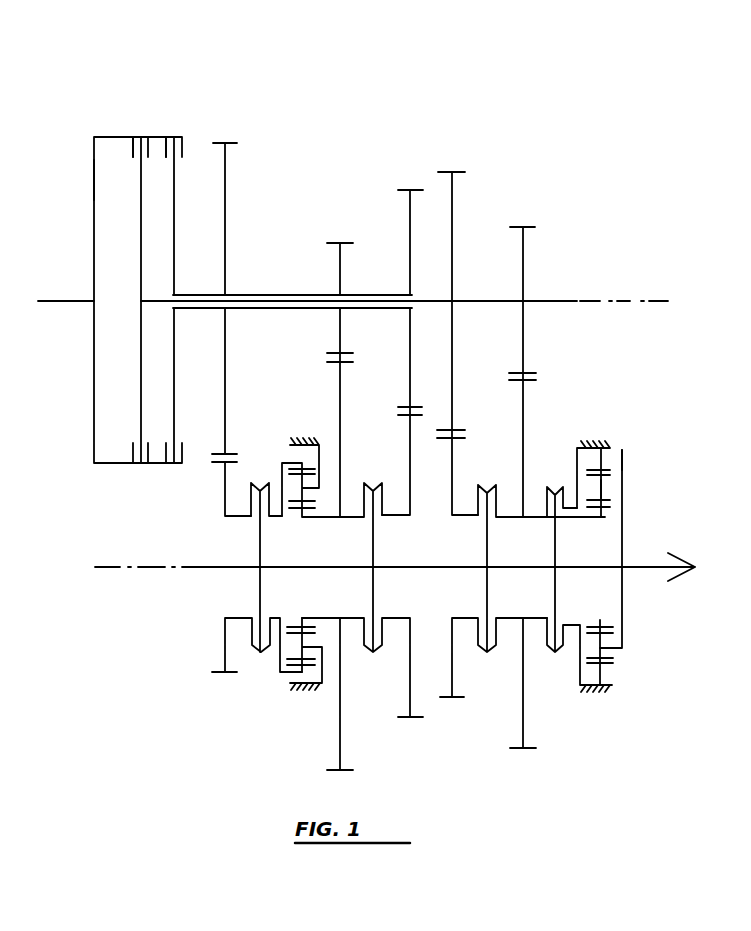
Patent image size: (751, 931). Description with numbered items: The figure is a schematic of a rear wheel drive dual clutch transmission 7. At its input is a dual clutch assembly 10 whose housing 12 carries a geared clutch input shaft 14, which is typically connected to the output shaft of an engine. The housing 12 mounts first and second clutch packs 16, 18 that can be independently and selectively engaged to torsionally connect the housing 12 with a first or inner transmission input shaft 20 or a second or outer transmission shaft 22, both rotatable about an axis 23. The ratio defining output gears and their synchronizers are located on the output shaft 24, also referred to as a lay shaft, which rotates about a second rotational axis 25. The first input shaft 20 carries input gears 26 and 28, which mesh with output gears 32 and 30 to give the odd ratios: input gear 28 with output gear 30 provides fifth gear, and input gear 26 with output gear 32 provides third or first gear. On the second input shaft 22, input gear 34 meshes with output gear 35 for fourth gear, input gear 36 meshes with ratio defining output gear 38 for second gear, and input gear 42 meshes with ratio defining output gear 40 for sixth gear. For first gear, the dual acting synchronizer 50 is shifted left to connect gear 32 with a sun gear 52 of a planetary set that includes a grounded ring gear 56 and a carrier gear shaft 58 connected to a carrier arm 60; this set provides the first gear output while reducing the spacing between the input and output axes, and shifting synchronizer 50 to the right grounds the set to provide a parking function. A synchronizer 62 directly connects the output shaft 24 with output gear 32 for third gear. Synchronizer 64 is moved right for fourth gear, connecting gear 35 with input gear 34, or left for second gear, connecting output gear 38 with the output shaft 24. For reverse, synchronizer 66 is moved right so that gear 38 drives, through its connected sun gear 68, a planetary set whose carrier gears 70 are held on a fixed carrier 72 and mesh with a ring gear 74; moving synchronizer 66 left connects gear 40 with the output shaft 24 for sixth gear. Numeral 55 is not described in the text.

The dual clutch transmission 7 is at (313, 140).
The dual clutch assembly 10 is at (112, 137).
The housing 12 is at (93, 177).
The geared clutch input shaft 14 is at (50, 300).
The first clutch pack 16 is at (133, 148).
The second clutch pack 18 is at (166, 148).
The first transmission input shaft 20 is at (548, 302).
The second transmission input shaft 22 is at (247, 295).
The axis 23 is at (637, 302).
The output shaft 24 is at (402, 562).
The second rotational axis 25 is at (128, 568).
The input gear 26 is at (523, 347).
The input gear 28 is at (452, 372).
The output gear 30 is at (451, 450).
The output gear 32 is at (523, 410).
The input gear 34 is at (410, 377).
The output gear 35 is at (410, 426).
The input gear 36 is at (338, 343).
The ratio defining output gear 38 is at (338, 384).
The ratio defining output gear 40 is at (225, 477).
The input gear 42 is at (225, 392).
The dual acting synchronizer 50 is at (550, 463).
The sun gear 52 is at (612, 520).
The clutch member 55 is at (615, 490).
The grounded ring gear 56 is at (623, 455).
The shaft 58 is at (612, 510).
The carrier arm 60 is at (622, 600).
The synchronizer 62 is at (487, 655).
The synchronizer 64 is at (373, 655).
The synchronizer 66 is at (258, 655).
The sun gear 68 is at (290, 512).
The carrier gears 70 is at (305, 640).
The fixed carrier 72 is at (332, 462).
The ring gear 74 is at (300, 690).